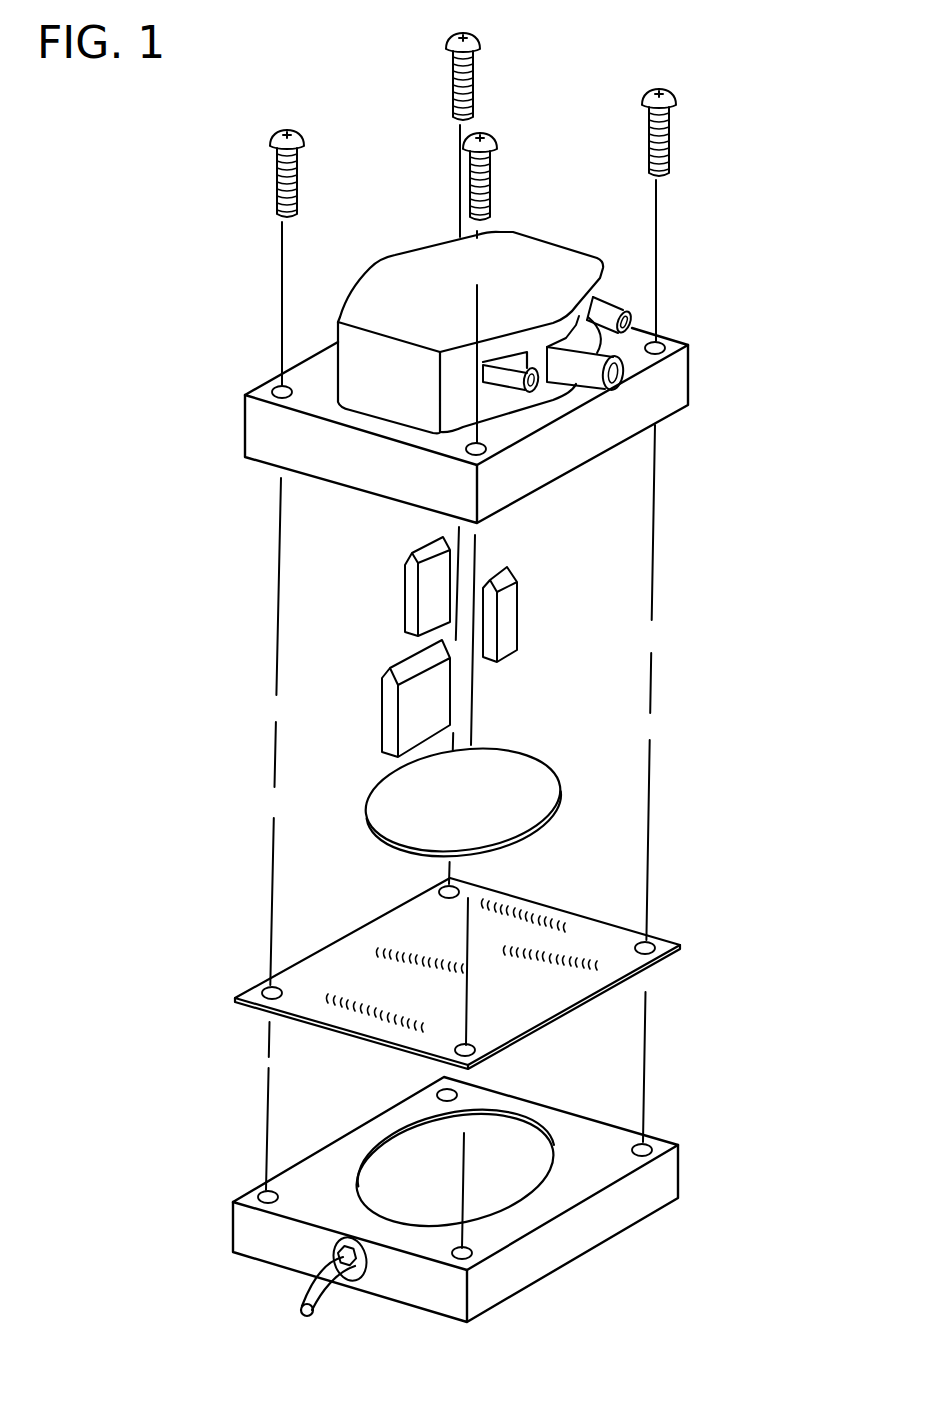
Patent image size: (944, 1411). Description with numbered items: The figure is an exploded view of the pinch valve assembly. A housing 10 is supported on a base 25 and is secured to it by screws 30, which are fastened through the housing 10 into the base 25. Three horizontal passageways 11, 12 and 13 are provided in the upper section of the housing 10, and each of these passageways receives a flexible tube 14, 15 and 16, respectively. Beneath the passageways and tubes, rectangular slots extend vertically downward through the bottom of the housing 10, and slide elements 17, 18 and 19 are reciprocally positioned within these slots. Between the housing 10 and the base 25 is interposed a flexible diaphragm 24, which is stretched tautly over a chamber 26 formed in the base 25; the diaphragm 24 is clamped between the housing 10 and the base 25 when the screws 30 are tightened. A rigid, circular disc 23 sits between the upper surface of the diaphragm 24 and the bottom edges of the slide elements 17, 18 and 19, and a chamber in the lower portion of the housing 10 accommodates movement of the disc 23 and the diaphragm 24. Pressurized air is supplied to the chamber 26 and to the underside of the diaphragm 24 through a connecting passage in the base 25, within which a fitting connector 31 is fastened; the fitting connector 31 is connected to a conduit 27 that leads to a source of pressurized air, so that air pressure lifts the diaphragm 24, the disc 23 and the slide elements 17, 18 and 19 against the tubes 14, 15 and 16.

The housing 10 is at (657, 400).
The horizontal passageway 11 is at (505, 358).
The horizontal passageway 12 is at (566, 333).
The horizontal passageway 13 is at (595, 297).
The flexible tube 14 is at (508, 373).
The flexible tube 15 is at (590, 379).
The flexible tube 16 is at (631, 318).
The slide element 17 is at (405, 610).
The slide element 18 is at (452, 708).
The slide element 19 is at (517, 582).
The rigid circular disc 23 is at (561, 778).
The flexible diaphragm 24 is at (592, 1002).
The base 25 is at (628, 1207).
The chamber 26 is at (507, 1144).
The conduit 27 is at (300, 1308).
The screws 30 is at (670, 122).
The fitting connector 31 is at (335, 1248).